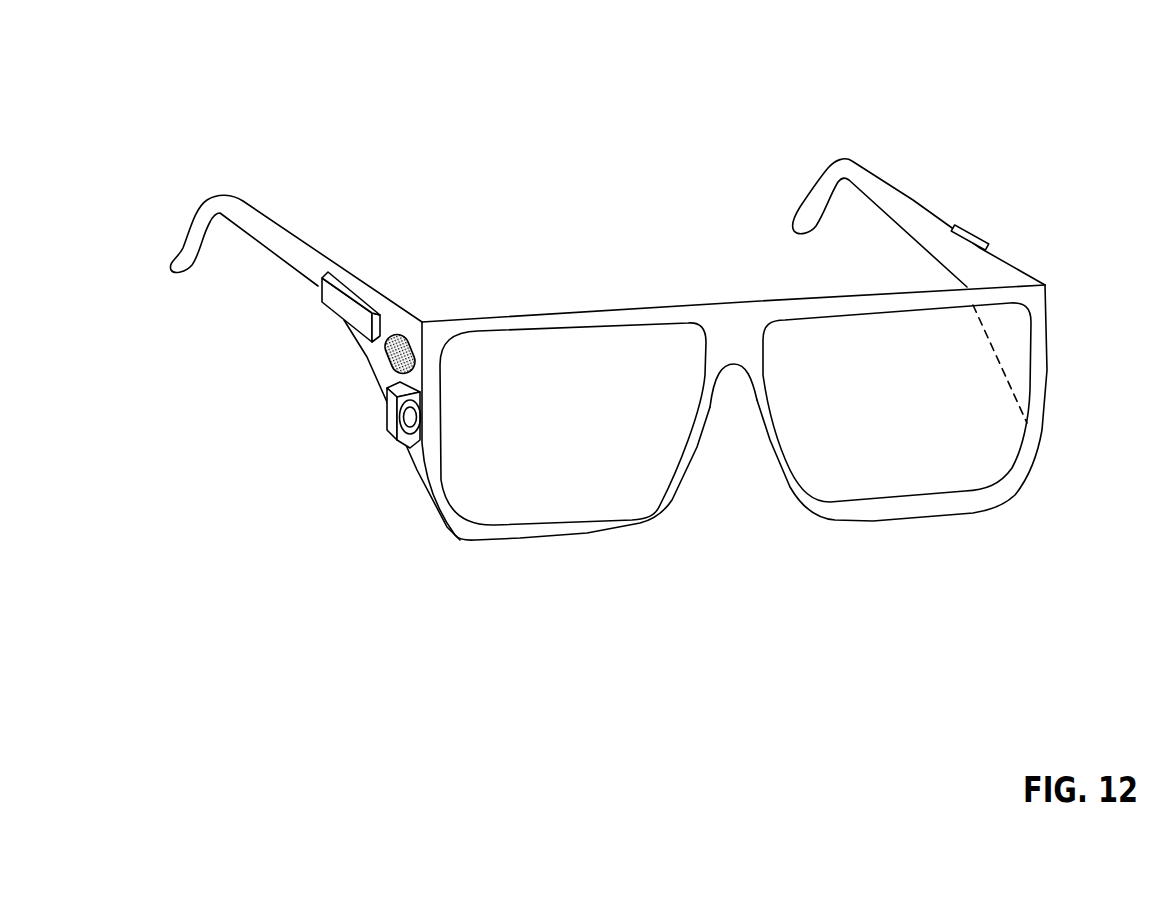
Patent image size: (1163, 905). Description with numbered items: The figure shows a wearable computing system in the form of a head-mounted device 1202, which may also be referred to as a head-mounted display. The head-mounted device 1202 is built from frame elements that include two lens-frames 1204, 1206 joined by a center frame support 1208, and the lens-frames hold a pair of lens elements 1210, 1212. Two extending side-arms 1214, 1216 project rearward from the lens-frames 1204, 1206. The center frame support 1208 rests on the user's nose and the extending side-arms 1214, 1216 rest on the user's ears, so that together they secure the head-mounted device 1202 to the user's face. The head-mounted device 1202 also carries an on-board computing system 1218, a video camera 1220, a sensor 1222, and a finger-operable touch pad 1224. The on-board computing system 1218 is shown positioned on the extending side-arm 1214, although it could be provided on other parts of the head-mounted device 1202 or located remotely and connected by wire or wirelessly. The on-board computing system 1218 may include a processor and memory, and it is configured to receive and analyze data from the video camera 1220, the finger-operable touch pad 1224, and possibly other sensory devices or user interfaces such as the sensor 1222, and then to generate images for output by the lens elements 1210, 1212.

The head-mounted device 1202 is at (645, 125).
The lens-frame 1204 is at (647, 320).
The lens-frame 1206 is at (840, 302).
The center frame support 1208 is at (737, 328).
The lens element 1210 is at (503, 498).
The lens element 1212 is at (917, 480).
The extending side-arm 1214 is at (347, 280).
The extending side-arm 1216 is at (923, 207).
The on-board computing system 1218 is at (342, 302).
The video camera 1220 is at (390, 407).
The sensor 1222 is at (977, 232).
The finger-operable touch pad 1224 is at (393, 353).